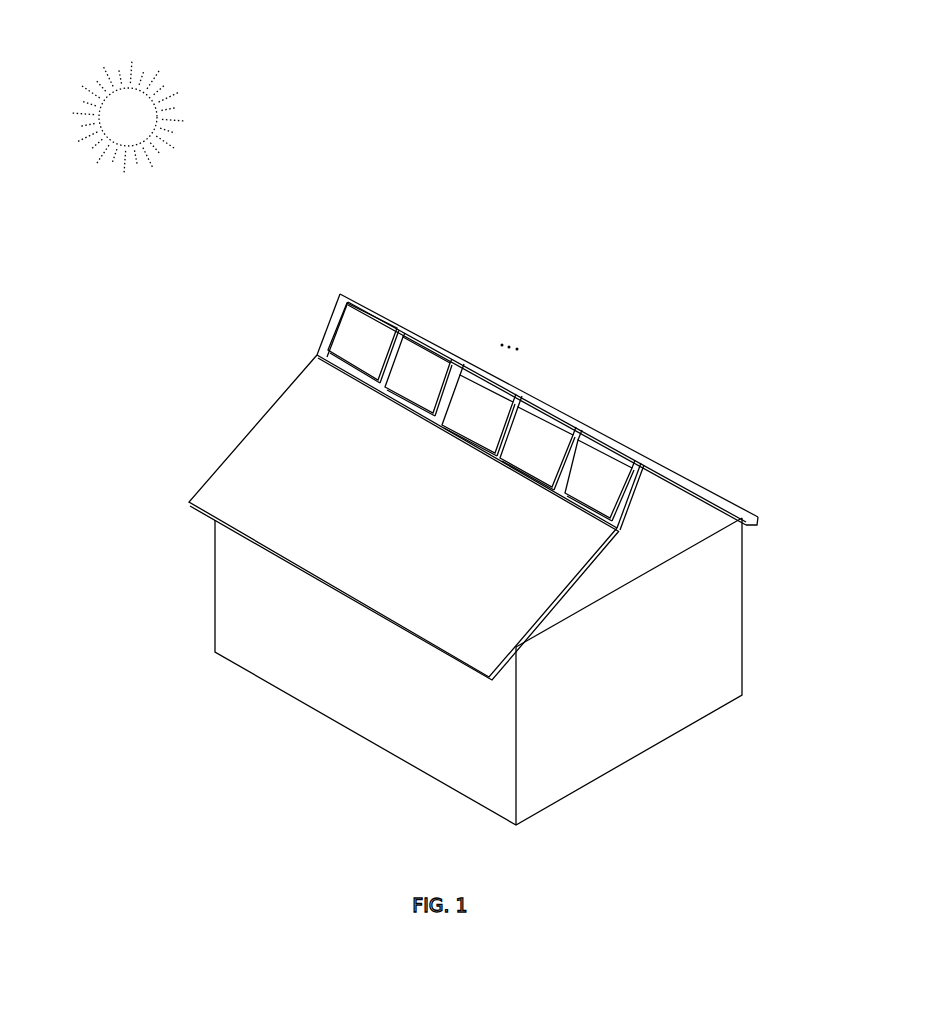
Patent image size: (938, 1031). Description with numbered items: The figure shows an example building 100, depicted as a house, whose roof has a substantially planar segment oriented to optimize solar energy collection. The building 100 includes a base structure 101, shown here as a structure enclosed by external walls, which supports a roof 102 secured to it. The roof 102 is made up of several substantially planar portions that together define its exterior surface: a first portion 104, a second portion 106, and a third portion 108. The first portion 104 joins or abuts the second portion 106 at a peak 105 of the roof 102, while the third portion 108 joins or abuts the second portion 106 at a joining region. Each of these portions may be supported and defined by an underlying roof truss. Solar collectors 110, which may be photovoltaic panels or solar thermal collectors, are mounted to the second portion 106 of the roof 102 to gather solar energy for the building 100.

The building 100 is at (405, 232).
The base structure 101 is at (795, 622).
The roof 102 is at (738, 470).
The first portion 104 is at (268, 427).
The peak 105 is at (516, 387).
The second portion 106 is at (329, 334).
The third portion 108 is at (619, 446).
The solar collectors 110 is at (396, 326).